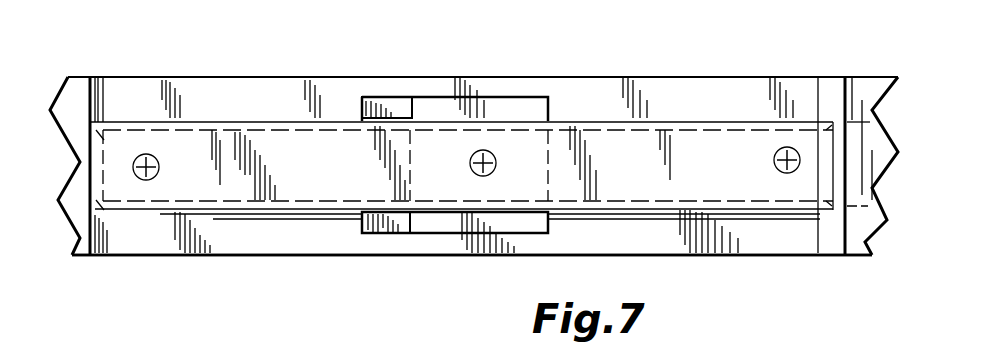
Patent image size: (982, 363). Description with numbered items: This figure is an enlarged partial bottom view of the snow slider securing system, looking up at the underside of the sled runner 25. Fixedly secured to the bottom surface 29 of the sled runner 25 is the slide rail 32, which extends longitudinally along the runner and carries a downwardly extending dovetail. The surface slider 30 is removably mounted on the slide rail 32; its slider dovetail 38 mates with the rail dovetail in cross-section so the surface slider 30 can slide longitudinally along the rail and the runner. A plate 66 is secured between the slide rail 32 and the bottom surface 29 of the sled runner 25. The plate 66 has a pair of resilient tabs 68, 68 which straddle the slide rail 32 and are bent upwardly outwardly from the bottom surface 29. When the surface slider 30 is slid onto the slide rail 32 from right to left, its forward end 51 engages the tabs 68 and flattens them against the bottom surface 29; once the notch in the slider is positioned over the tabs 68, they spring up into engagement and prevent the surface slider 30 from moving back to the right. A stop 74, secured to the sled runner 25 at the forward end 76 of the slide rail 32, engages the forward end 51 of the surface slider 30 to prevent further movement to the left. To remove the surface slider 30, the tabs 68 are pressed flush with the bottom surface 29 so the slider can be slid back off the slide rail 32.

The sled runner 25 is at (192, 84).
The bottom surface 29 is at (268, 88).
The surface slider 30 is at (855, 96).
The slide rail 32 is at (640, 161).
The slider dovetail 38 is at (158, 172).
The forward end 51 is at (829, 92).
The plate 66 is at (514, 97).
The resilient tabs 68 is at (380, 98).
The stop 74 is at (84, 258).
The forward end 76 is at (90, 132).